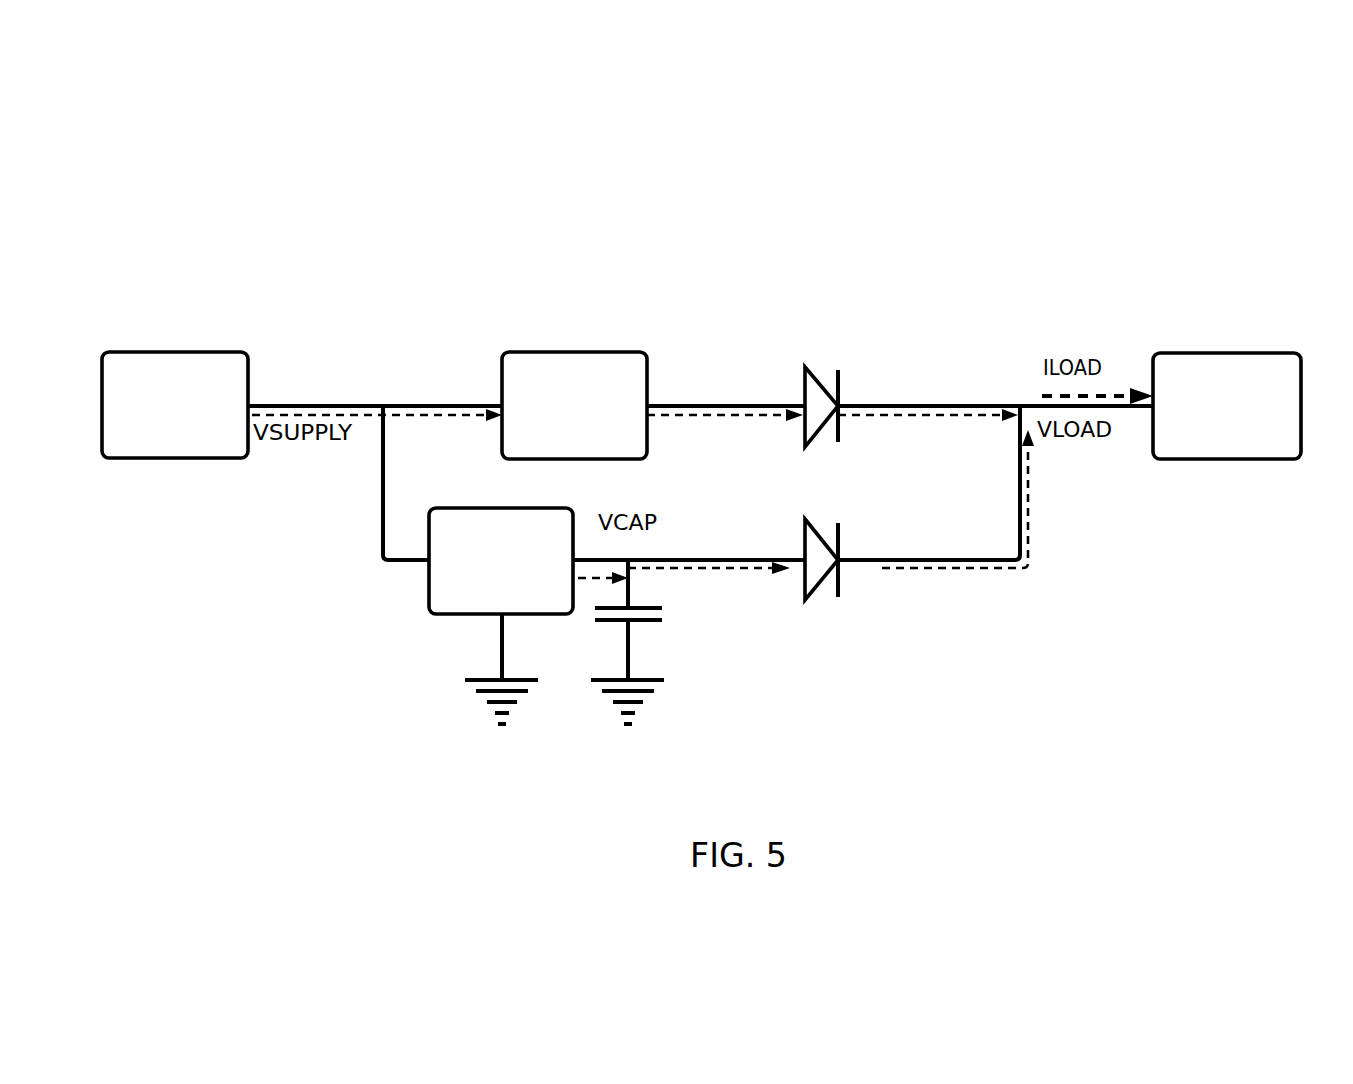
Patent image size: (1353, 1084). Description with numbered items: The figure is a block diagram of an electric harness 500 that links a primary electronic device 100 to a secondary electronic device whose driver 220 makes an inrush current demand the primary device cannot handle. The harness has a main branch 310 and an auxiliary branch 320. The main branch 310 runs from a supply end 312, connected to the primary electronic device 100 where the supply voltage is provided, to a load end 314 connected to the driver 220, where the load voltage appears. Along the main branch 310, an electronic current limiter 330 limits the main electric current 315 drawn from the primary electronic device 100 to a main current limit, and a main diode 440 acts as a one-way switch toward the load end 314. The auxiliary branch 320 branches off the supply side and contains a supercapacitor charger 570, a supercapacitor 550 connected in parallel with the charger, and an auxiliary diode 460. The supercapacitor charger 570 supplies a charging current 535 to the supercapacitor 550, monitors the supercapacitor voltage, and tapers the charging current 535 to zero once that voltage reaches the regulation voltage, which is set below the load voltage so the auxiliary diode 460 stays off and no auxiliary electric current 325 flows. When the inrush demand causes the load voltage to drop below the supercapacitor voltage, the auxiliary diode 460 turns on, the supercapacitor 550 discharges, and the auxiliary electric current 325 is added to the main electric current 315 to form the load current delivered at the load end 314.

The primary electronic device 100 is at (175, 405).
The driver 220 is at (1227, 406).
The main branch 310 is at (672, 323).
The supply end 312 is at (355, 406).
The load end 314 is at (1041, 402).
The main electric current 315 is at (383, 420).
The auxiliary branch 320 is at (352, 619).
The auxiliary electric current 325 is at (700, 572).
The electronic current limiter 330 is at (574, 405).
The main diode 440 is at (807, 373).
The auxiliary diode 460 is at (812, 590).
The electric harness 500 is at (758, 214).
The charging current 535 is at (585, 583).
The supercapacitor 550 is at (648, 622).
The supercapacitor charger 570 is at (501, 616).